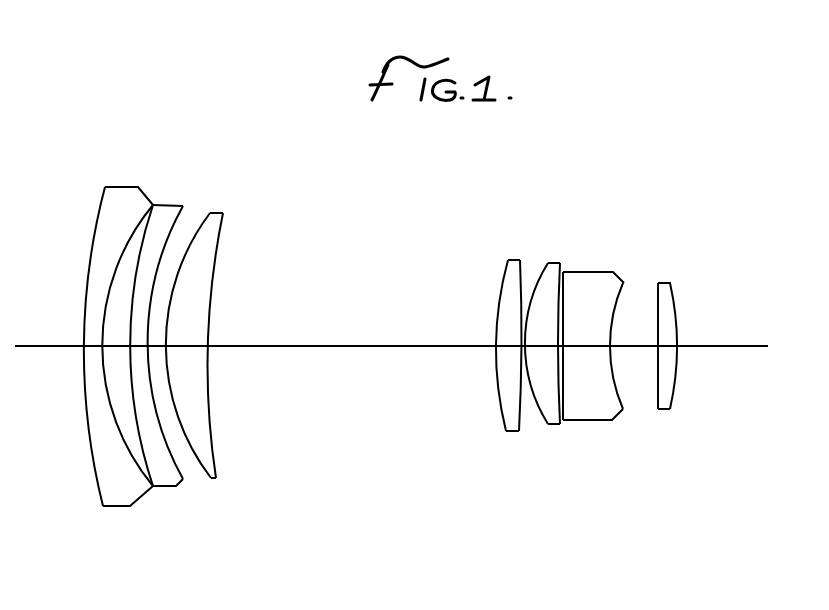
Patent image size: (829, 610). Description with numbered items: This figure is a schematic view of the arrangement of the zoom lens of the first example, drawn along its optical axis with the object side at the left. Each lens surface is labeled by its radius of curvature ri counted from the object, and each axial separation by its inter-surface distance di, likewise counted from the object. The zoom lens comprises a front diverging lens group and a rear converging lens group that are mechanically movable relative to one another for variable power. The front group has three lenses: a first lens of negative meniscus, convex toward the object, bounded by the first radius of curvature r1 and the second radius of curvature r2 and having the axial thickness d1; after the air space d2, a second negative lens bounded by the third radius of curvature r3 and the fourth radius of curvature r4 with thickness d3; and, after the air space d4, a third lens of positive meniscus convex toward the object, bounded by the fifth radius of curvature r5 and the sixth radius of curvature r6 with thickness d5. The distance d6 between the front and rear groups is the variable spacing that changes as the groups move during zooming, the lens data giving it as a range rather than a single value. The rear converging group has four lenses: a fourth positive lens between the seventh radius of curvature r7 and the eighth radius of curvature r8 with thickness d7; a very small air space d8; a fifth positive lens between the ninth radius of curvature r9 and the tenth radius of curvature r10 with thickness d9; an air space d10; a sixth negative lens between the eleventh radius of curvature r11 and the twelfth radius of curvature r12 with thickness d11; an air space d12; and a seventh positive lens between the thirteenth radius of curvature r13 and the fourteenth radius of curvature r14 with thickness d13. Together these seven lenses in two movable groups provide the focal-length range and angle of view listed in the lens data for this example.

The first radius of curvature r1 is at (105, 187).
The second radius of curvature r2 is at (153, 205).
The third radius of curvature r3 is at (153, 205).
The fourth radius of curvature r4 is at (183, 206).
The fifth radius of curvature r5 is at (210, 213).
The sixth radius of curvature r6 is at (223, 213).
The seventh radius of curvature r7 is at (510, 260).
The eighth radius of curvature r8 is at (520, 260).
The ninth radius of curvature r9 is at (548, 263).
The tenth radius of curvature r10 is at (560, 263).
The eleventh radius of curvature r11 is at (563, 272).
The twelfth radius of curvature r12 is at (623, 283).
The thirteenth radius of curvature r13 is at (658, 283).
The fourteenth radius of curvature r14 is at (670, 283).
The first inter-surface distance d1 is at (95, 348).
The second inter-surface distance d2 is at (118, 348).
The third inter-surface distance d3 is at (140, 348).
The fourth inter-surface distance d4 is at (155, 348).
The fifth inter-surface distance d5 is at (187, 348).
The sixth inter-surface distance d6 is at (373, 348).
The seventh inter-surface distance d7 is at (505, 348).
The eighth inter-surface distance d8 is at (523, 348).
The ninth inter-surface distance d9 is at (542, 348).
The tenth inter-surface distance d10 is at (560, 348).
The eleventh inter-surface distance d11 is at (590, 348).
The twelfth inter-surface distance d12 is at (635, 348).
The thirteenth inter-surface distance d13 is at (668, 348).